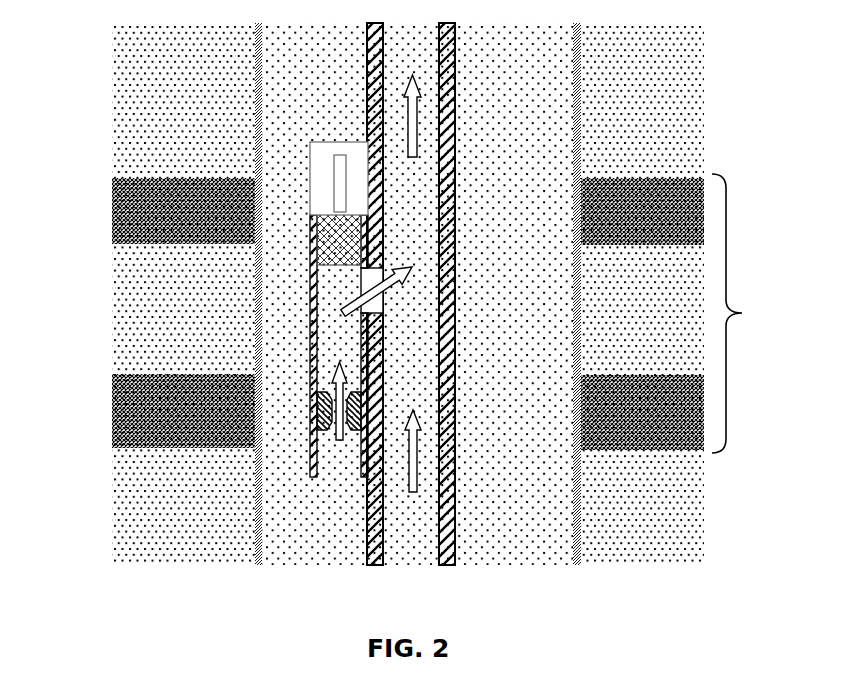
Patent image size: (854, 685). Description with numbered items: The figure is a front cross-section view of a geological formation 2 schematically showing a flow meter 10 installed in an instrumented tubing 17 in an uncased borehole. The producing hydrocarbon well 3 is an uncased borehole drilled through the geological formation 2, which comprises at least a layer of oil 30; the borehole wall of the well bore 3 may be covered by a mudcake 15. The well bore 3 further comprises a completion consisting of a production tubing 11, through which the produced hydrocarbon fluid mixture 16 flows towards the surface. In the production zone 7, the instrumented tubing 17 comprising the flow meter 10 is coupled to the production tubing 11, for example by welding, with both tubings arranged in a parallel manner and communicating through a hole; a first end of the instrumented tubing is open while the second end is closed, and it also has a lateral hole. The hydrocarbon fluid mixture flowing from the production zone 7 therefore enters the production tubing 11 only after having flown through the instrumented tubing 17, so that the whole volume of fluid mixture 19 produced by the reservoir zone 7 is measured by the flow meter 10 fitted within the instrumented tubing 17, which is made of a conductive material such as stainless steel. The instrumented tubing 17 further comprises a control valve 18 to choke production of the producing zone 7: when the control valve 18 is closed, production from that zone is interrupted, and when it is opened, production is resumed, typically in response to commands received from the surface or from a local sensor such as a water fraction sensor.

The geological formation 2 is at (166, 549).
The producing hydrocarbon well 3 is at (540, 556).
The production zone 7 is at (735, 313).
The flow meter 10 is at (310, 405).
The production tubing 11 is at (455, 127).
The mudcake 15 is at (258, 565).
The produced hydrocarbon fluid mixture 16 is at (412, 472).
The instrumented tubing 17 is at (300, 290).
The control valve 18 is at (325, 192).
The fluid mixture 19 is at (340, 440).
The layer of oil 30 is at (118, 209).